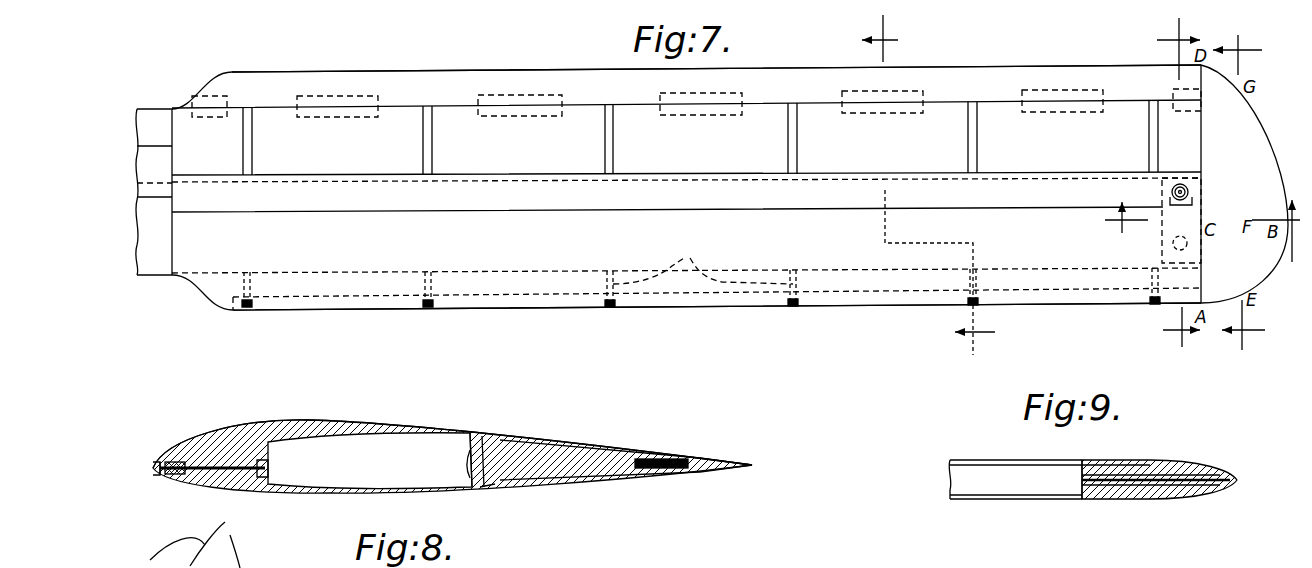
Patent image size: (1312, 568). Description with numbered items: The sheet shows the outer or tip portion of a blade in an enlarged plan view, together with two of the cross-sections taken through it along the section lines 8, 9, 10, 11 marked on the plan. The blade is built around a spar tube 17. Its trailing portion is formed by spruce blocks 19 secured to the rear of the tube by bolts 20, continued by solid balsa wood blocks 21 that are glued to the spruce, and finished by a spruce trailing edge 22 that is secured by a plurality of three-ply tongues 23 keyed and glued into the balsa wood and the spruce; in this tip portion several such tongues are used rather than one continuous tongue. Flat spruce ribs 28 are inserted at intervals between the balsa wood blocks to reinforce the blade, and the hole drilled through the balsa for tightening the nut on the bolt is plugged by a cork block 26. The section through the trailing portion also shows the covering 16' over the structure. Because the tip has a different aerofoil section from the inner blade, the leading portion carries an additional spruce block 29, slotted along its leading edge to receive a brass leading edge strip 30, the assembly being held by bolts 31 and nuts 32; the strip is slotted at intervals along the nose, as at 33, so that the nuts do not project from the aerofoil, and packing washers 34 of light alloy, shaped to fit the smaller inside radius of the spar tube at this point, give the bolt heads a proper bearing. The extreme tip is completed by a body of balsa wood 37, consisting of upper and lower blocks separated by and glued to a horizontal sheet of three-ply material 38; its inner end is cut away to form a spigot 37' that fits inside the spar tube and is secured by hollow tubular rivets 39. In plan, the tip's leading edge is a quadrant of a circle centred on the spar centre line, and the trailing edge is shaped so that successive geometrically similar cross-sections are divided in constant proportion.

In FIG. 7, the section line 8— 8 is at (928, 186).
In FIG. 7, the section line 9— 9 is at (1202, 234).
In FIG. 7, the section line 10— 10 is at (1240, 194).
In FIG. 7, the section line 11— 11 is at (1178, 186).
In FIG. 8, the upper skin covering 16' is at (531, 430).
In FIG. 7, the spar tube 17 is at (508, 273).
In FIG. 8, the spar tube 17 is at (313, 437).
In FIG. 9, the spar tube 17 is at (978, 462).
In FIG. 7, the spruce blocks 19 is at (352, 197).
In FIG. 8, the spruce blocks 19 is at (478, 432).
In FIG. 8, the bolts 20 is at (458, 460).
In FIG. 7, the balsa wood blocks 21 is at (700, 137).
In FIG. 8, the balsa wood blocks 21 is at (586, 446).
In FIG. 7, the trailing edge 22 is at (984, 72).
In FIG. 8, the trailing edge 22 is at (721, 465).
In FIG. 7, the 3-ply tongues 23 is at (658, 97).
In FIG. 8, the 3-ply tongues 23 is at (666, 460).
In FIG. 8, the cork block 26 is at (494, 486).
In FIG. 7, the flat spruce ribs 28 is at (970, 128).
In FIG. 7, the spruce block 29 is at (697, 300).
In FIG. 8, the spruce block 29 is at (249, 432).
In FIG. 8, the leading edge strip 30 is at (172, 462).
In FIG. 7, the bolts 31 is at (703, 261).
In FIG. 8, the bolts 31 is at (212, 474).
In FIG. 8, the nuts 32 is at (165, 478).
In FIG. 8, the slots 33 is at (156, 470).
In FIG. 8, the packing washers 34 is at (251, 480).
In FIG. 7, the body of balsa wood 37 is at (1244, 184).
In FIG. 9, the body of balsa wood 37 is at (1159, 462).
In FIG. 7, the spigot 37' is at (1163, 220).
In FIG. 9, the spigot 37' is at (1122, 479).
In FIG. 9, the sheet of 3-ply material 38 is at (1175, 480).
In FIG. 7, the hollow tubular rivets 39 is at (1186, 238).
In FIG. 9, the hollow tubular rivets 39 is at (1122, 465).